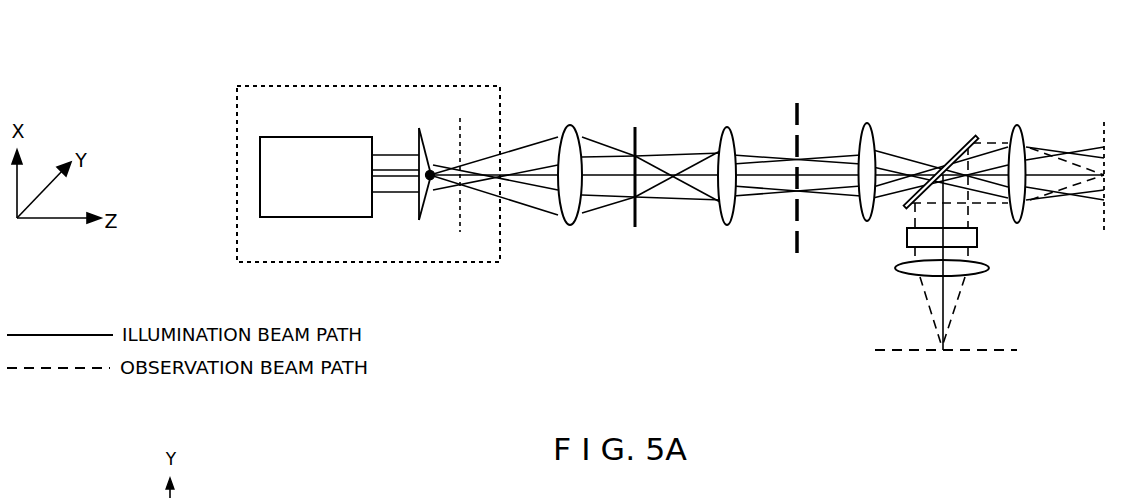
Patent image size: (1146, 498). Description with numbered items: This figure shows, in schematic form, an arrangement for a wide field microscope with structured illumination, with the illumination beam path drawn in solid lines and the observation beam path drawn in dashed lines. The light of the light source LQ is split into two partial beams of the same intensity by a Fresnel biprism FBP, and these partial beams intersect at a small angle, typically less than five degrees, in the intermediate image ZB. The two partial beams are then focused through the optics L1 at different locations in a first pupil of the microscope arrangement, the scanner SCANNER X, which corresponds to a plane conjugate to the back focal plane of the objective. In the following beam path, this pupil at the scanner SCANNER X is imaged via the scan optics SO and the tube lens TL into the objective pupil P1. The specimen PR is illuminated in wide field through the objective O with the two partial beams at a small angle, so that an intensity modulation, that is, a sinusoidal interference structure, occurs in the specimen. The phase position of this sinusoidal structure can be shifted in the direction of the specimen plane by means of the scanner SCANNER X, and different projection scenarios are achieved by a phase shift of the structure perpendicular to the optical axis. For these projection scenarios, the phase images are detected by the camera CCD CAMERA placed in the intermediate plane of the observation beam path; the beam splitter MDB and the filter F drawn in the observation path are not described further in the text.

The light source LQ is at (316, 194).
The Fresnel biprism FBP is at (421, 189).
The intermediate image ZB is at (631, 166).
The optics L1 is at (563, 162).
The scanner X SCANNER X is at (645, 165).
The scan optics SO is at (739, 162).
The tube lens TL is at (942, 188).
The objective pupil P1 is at (941, 140).
The main dichroic beam splitter MDB is at (941, 140).
The objective O is at (1017, 160).
The specimen PR is at (1105, 163).
The filter F is at (957, 240).
The camera CCD CAMERA is at (950, 383).